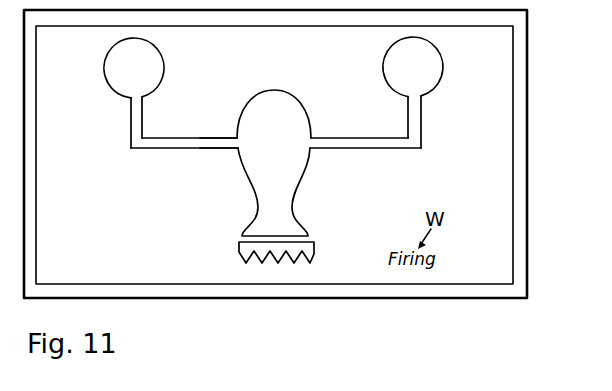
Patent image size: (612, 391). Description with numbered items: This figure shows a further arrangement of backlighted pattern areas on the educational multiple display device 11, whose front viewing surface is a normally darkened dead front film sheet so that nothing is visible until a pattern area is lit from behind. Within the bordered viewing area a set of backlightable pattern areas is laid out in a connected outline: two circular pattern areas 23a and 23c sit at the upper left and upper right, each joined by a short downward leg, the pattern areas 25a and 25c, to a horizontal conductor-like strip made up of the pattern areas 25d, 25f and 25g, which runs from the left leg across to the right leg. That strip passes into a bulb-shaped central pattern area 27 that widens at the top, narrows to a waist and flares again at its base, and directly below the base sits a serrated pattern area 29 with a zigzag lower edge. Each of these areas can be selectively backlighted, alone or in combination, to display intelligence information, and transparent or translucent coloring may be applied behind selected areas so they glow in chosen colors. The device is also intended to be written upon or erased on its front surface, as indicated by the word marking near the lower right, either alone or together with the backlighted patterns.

The educational multiple display device 11 is at (532, 214).
The backlightable pattern area 23a is at (158, 72).
The backlightable pattern area 23c is at (433, 69).
The backlightable pattern area 25a is at (138, 116).
The backlightable pattern area 25c is at (416, 109).
The backlightable pattern area 25d is at (149, 148).
The backlightable pattern area 25f is at (229, 148).
The horizontal conductor portion 25g is at (389, 145).
The backlightable pattern area 27 is at (250, 181).
The backlightable pattern area 29 is at (243, 248).